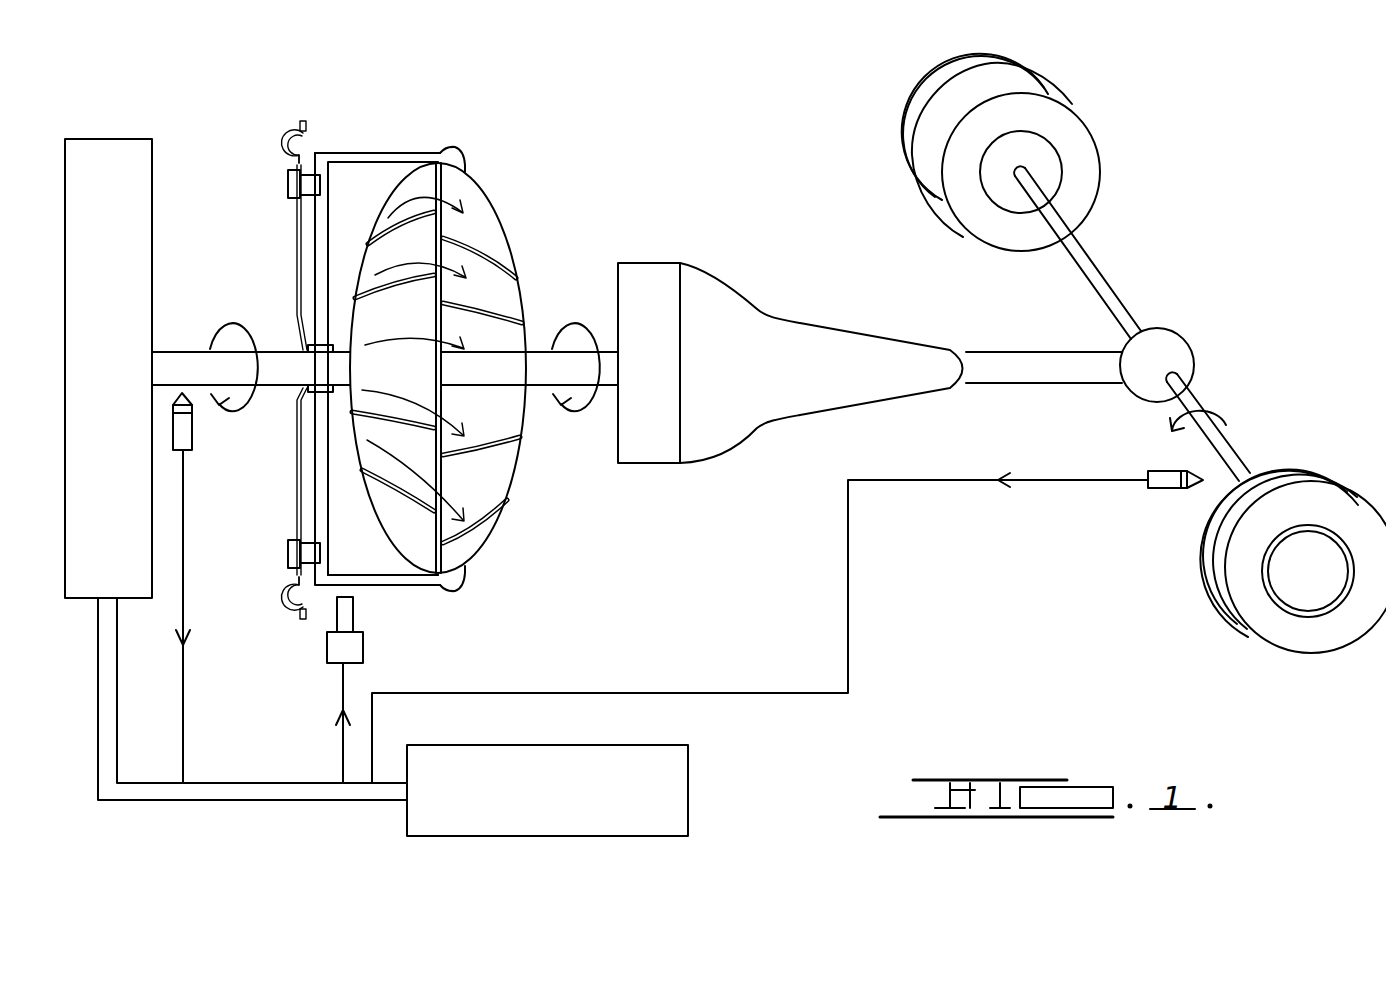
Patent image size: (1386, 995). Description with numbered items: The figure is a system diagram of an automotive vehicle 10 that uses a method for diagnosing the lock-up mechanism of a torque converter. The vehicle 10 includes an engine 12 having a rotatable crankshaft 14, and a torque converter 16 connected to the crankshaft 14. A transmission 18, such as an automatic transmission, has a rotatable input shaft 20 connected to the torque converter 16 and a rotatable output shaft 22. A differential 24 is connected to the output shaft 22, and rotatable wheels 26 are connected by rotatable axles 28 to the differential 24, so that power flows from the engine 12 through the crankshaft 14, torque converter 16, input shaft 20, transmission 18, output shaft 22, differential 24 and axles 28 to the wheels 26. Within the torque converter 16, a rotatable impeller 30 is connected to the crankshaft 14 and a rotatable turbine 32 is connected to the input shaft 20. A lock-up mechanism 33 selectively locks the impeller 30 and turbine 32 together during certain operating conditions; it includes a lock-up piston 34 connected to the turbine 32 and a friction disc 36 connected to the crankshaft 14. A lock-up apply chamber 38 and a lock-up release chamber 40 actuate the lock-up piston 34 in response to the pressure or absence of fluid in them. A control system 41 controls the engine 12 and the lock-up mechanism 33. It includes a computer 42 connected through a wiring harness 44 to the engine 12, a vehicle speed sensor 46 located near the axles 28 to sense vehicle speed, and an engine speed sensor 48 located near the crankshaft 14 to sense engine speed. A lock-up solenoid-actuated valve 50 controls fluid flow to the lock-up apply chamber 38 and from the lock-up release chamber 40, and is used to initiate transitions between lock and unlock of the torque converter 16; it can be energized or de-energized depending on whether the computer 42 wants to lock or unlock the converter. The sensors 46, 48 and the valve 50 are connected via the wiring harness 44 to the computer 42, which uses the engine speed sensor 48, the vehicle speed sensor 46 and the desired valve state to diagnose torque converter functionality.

The vehicle 10 is at (743, 100).
The engine 12 is at (122, 142).
The crankshaft 14 is at (187, 354).
The torque converter 16 is at (487, 196).
The transmission 18 is at (712, 455).
The input shaft 20 is at (540, 375).
The output shaft 22 is at (975, 352).
The differential 24 is at (1190, 355).
The wheels 26 is at (1092, 137).
The axles 28 is at (1110, 285).
The impeller 30 is at (410, 188).
The turbine 32 is at (494, 232).
The lock-up mechanism 33 is at (318, 146).
The lock-up piston 34 is at (345, 152).
The friction disc 36 is at (315, 187).
The lock-up apply chamber 38 is at (375, 555).
The lock-up release chamber 40 is at (305, 515).
The control system 41 is at (648, 838).
The computer 42 is at (530, 820).
The wiring harness 44 is at (232, 800).
The vehicle speed sensor 46 is at (1160, 487).
The engine speed sensor 48 is at (192, 430).
The lock-up solenoid-actuated valve 50 is at (332, 642).